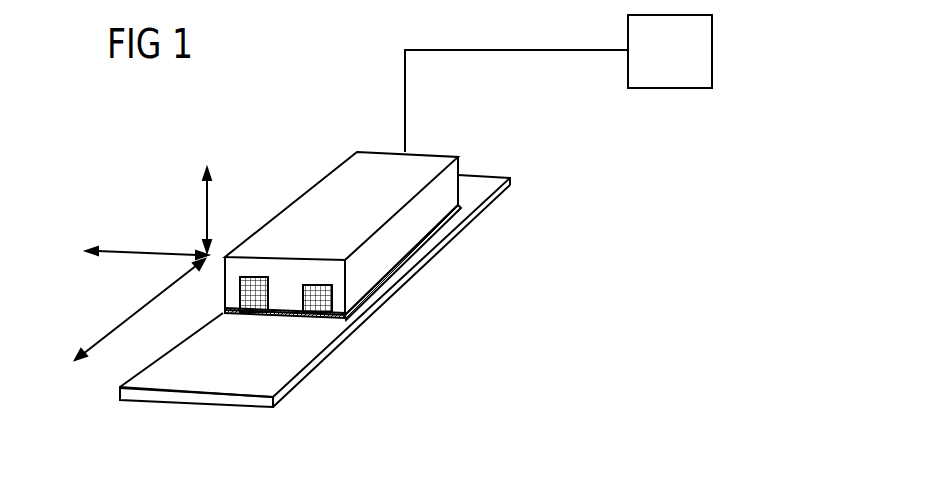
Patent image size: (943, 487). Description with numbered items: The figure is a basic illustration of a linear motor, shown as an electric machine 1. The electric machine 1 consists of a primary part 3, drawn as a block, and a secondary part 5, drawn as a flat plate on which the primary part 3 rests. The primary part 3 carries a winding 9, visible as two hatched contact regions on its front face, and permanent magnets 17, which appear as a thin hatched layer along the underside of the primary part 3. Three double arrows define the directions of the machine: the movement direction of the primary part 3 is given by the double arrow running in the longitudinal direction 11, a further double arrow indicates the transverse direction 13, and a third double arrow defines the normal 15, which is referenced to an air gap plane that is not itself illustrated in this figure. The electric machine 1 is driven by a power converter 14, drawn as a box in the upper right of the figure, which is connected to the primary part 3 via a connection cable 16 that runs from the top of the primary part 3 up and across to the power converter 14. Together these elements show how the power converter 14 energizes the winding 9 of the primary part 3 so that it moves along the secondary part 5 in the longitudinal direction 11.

The electric machine 1 is at (580, 169).
The primary part 3 is at (345, 182).
The secondary part 5 is at (277, 378).
The winding 9 is at (255, 280).
The longitudinal direction 11 is at (132, 318).
The transverse direction 13 is at (133, 251).
The power converter 14 is at (712, 53).
The normal 15 is at (205, 215).
The connection cable 16 is at (507, 50).
The permanent magnets 17 is at (335, 315).